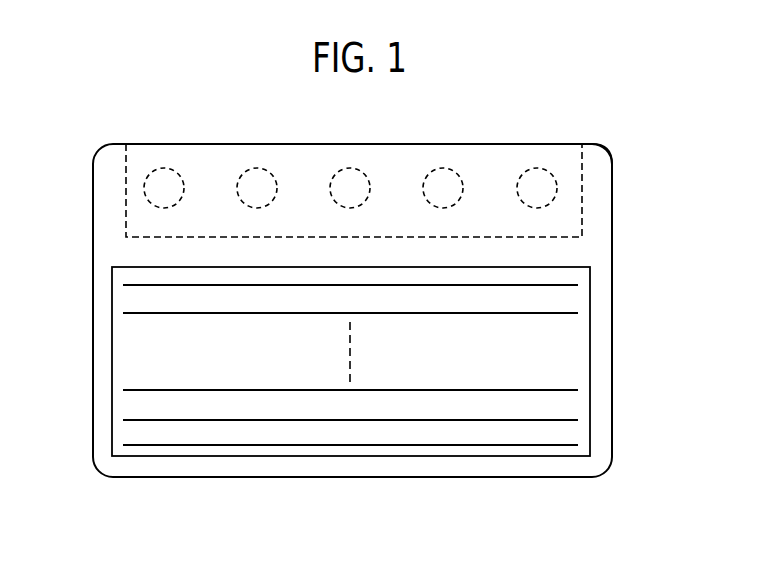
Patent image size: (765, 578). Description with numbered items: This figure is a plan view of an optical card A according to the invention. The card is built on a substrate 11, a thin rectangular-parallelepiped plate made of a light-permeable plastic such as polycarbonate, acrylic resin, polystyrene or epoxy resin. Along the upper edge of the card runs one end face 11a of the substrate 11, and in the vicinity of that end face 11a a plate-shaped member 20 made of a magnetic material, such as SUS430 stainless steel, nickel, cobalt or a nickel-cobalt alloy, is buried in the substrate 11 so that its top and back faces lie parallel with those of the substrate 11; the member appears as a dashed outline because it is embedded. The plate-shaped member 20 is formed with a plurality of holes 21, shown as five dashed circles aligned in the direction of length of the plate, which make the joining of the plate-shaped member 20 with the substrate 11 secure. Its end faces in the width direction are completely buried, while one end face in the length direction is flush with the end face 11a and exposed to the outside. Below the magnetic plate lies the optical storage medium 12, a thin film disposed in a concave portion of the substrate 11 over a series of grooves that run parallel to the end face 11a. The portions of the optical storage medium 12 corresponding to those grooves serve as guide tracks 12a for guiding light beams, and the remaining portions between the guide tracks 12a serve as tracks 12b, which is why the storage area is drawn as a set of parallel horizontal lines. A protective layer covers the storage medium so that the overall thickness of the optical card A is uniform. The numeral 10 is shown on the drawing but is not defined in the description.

The housing body 10 is at (612, 287).
The substrate 11 is at (592, 157).
The end face 11a is at (445, 144).
The optical storage medium 12 is at (572, 265).
The guide tracks 12a is at (550, 388).
The tracks 12b is at (562, 408).
The plate-shaped member 20 is at (557, 197).
The holes 21 is at (144, 180).
The optical card A is at (614, 110).